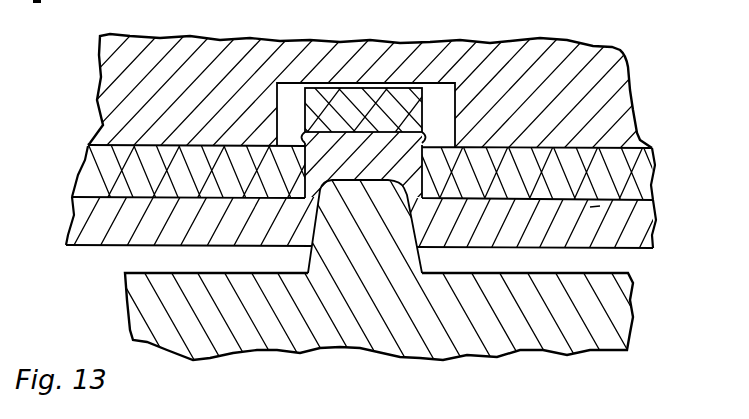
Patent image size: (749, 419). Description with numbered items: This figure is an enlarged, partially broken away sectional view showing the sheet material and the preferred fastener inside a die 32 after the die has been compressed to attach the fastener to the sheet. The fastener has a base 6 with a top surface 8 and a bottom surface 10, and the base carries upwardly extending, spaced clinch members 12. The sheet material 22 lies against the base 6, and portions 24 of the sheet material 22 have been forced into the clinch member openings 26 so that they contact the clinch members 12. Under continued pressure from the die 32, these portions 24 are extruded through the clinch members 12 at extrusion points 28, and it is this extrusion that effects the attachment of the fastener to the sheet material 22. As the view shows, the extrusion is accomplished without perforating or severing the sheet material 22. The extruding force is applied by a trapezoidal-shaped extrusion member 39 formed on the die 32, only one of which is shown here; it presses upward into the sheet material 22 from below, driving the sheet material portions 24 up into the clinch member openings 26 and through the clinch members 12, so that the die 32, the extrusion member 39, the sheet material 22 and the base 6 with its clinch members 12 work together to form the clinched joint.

The die 32 is at (90, 73).
The top surface 8 is at (507, 148).
The extrusion points 28 is at (290, 138).
The clinch members 12 is at (368, 77).
The portions of sheet material 24 is at (397, 148).
The base 6 is at (665, 153).
The sheet material 22 is at (675, 225).
The bottom surface 10 is at (590, 206).
The trapezoidal-shaped extrusion members 39 is at (337, 205).
The clinch member openings 26 is at (296, 204).